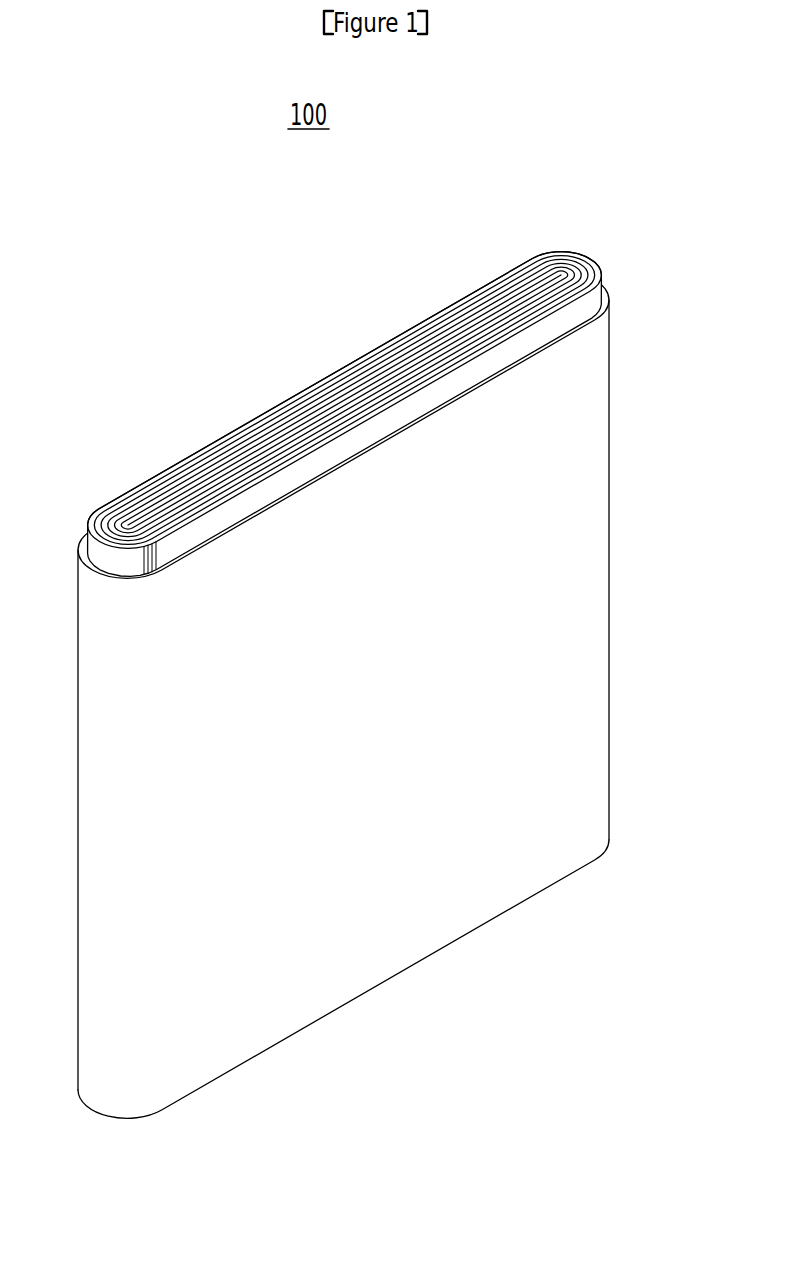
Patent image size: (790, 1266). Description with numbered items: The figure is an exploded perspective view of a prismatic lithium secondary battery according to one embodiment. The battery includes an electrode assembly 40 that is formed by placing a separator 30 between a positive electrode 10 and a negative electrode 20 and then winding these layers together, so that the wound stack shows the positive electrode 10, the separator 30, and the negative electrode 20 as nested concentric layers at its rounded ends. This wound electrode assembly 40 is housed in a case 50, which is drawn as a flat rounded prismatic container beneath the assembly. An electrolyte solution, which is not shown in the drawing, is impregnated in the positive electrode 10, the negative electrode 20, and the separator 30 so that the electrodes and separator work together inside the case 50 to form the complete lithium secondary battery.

The positive electrode 10 is at (601, 263).
The negative electrode 20 is at (564, 261).
The separator 30 is at (584, 262).
The electrode assembly 40 is at (320, 343).
The case 50 is at (592, 553).